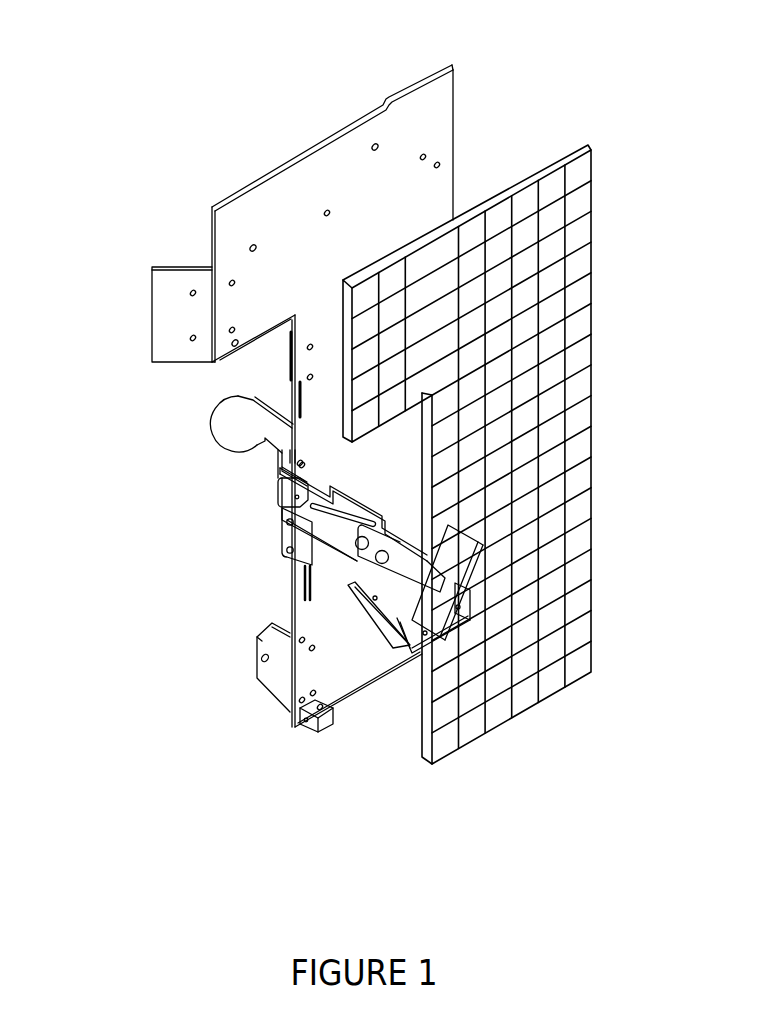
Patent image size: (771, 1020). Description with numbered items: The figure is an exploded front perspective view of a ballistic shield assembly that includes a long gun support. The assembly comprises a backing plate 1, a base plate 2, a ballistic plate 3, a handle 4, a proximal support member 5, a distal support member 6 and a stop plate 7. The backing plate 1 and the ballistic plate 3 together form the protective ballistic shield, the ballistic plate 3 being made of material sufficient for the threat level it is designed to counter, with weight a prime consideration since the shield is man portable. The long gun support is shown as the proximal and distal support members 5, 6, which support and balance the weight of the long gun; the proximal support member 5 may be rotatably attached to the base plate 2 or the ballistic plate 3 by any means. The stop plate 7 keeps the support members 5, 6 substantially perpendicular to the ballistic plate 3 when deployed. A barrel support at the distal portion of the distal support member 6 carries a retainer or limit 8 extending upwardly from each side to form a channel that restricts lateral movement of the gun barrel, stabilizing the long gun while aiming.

The backing plate 1 is at (612, 95).
The base plate 2 is at (302, 370).
The ballistic plate 3 is at (510, 442).
The handle 4 is at (260, 393).
The proximal support member 5 is at (214, 465).
The distal support member 6 is at (267, 558).
The stop plate 7 is at (168, 554).
The retainer 8 is at (415, 675).